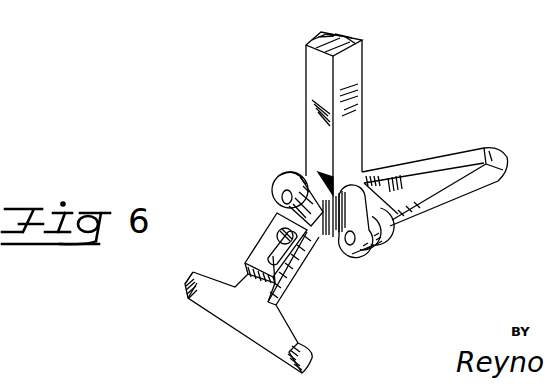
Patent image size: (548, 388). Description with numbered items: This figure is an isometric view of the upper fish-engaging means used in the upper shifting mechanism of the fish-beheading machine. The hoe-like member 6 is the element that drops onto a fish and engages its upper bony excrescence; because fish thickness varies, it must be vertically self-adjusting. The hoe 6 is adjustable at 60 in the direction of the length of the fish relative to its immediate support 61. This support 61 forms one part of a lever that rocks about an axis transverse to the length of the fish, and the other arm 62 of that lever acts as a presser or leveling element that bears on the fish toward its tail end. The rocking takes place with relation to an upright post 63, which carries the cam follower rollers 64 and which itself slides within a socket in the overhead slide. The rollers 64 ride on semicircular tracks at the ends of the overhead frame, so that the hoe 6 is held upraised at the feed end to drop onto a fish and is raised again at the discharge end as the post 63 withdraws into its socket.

The hoe-like member 6 is at (233, 332).
The adjustment 60 is at (273, 240).
The immediate support 61 is at (302, 236).
The other arm of the lever 62 is at (457, 193).
The upright post 63 is at (352, 63).
The cam follower roller 64 is at (295, 172).